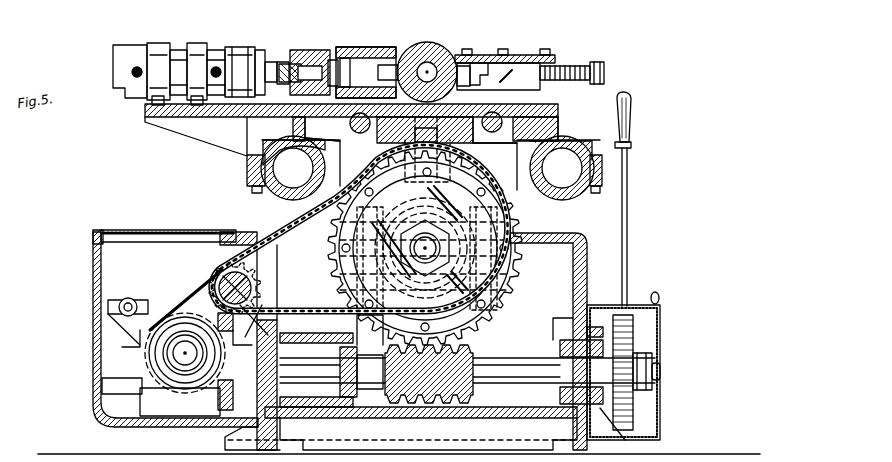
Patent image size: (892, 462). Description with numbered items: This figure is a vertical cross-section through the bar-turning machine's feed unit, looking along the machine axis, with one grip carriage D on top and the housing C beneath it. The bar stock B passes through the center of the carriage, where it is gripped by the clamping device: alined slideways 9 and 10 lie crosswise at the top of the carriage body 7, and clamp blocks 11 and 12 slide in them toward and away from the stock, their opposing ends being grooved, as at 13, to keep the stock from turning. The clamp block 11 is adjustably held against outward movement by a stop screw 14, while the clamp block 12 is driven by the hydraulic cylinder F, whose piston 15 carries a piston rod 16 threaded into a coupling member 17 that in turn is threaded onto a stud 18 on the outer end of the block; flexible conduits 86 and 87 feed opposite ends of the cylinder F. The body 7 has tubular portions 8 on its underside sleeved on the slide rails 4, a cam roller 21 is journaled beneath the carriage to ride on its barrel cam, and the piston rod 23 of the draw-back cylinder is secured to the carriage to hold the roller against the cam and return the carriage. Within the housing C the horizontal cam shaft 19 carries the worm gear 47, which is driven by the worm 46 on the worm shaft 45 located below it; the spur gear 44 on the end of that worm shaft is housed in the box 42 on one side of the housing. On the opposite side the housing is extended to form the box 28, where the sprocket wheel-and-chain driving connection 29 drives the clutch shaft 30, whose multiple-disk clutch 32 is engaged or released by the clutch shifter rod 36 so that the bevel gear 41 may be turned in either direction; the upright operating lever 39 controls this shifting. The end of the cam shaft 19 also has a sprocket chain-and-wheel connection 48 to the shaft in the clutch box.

The hydraulic cylinder F is at (197, 45).
The flexible conduit 86 is at (135, 76).
The flexible conduit 87 is at (225, 62).
The piston 15 is at (283, 60).
The coupling member 17 is at (288, 62).
The piston rod 16 is at (307, 50).
The stud 18 is at (332, 58).
The clamp block 12 is at (356, 47).
The slideway 10 is at (372, 47).
The bar stock B is at (427, 42).
The groove 13 is at (468, 63).
The clamp block 11 is at (488, 63).
The slideway 9 is at (516, 55).
The stop screw 14 is at (585, 66).
The carriage D is at (577, 103).
The body 7 is at (220, 118).
The tubular portion 8 is at (247, 167).
The slide rail 4 is at (282, 150).
The piston rod 23 is at (352, 126).
The cam roller 21 is at (452, 163).
The operating lever 39 is at (629, 240).
The box 28 is at (93, 339).
The housing C is at (587, 279).
The worm gear 47 is at (527, 284).
The cam shaft 19 is at (430, 258).
The sprocket chain-and-wheel connection 48 is at (360, 272).
The sprocket wheel-and-chain driving connection 29 is at (210, 290).
The clutch 32 is at (170, 300).
The clutch shaft 30 is at (180, 353).
The bevel gear 41 is at (220, 396).
The clutch shifter rod 36 is at (129, 298).
The worm 46 is at (452, 400).
The worm shaft 45 is at (512, 368).
The spur gear 44 is at (634, 337).
The box 42 is at (660, 406).